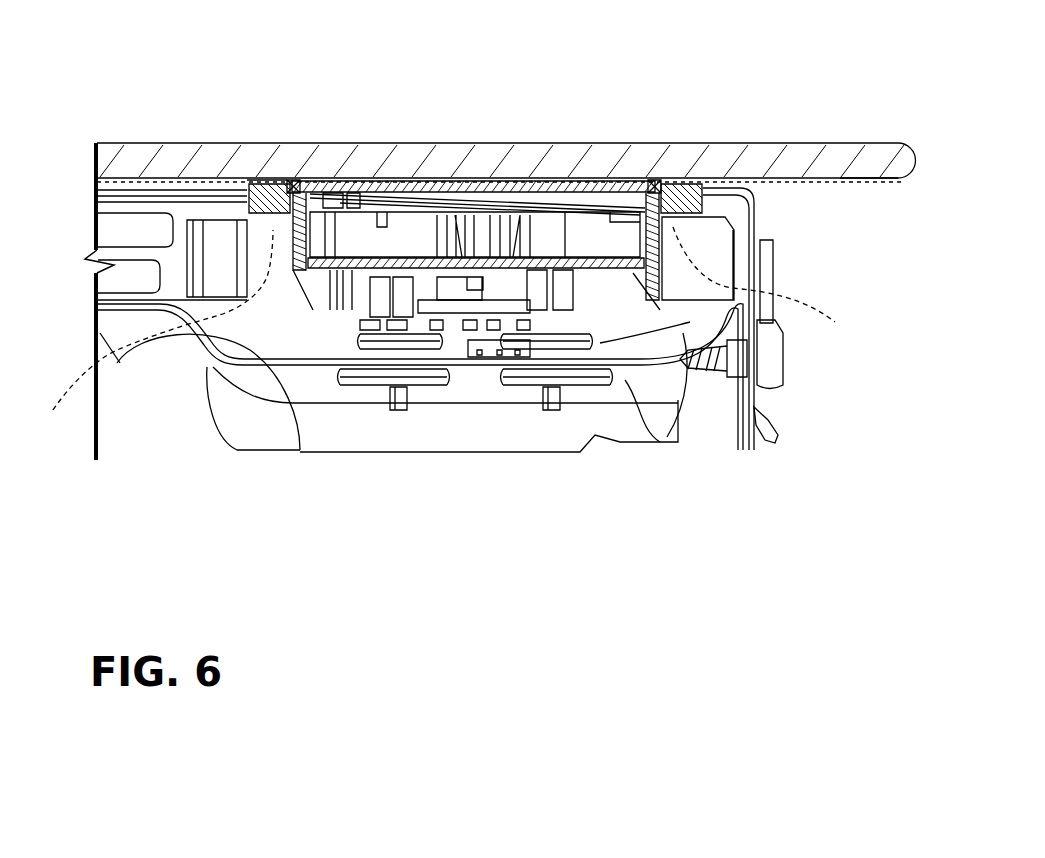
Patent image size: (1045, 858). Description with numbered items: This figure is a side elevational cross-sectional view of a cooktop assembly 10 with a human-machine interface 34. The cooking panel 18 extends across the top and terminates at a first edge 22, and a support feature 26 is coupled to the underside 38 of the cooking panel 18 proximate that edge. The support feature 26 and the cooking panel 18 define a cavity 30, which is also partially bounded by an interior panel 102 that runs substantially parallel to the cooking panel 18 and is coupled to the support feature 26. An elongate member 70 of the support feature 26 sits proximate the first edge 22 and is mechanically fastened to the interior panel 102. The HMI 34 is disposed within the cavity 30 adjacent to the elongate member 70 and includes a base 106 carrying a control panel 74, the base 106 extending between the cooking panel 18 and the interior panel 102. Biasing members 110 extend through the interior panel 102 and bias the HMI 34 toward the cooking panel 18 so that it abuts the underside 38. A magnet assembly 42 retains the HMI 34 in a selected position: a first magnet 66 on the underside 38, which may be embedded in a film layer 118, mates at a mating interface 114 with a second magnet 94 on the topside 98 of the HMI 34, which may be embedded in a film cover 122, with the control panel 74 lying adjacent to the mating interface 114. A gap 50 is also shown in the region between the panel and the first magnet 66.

The cooktop assembly 10 is at (813, 108).
The cooking panel 18 is at (215, 143).
The first edge 22 is at (917, 147).
The support feature 26 is at (783, 417).
The cavity 30 is at (290, 350).
The human-machine interface 34 is at (277, 274).
The underside 38 is at (877, 183).
The magnet assembly 42 is at (687, 145).
The gap 50 is at (260, 145).
The first magnet 66 is at (287, 145).
The elongate member 70 is at (757, 403).
The control panel 74 is at (422, 145).
The second magnet 94 is at (255, 217).
The topside 98 is at (327, 145).
The interior panel 102 is at (473, 367).
The base 106 is at (677, 353).
The biasing members 110 is at (372, 398).
The mating interface 114 is at (247, 199).
The film layer 118 is at (135, 143).
The film cover 122 is at (449, 337).